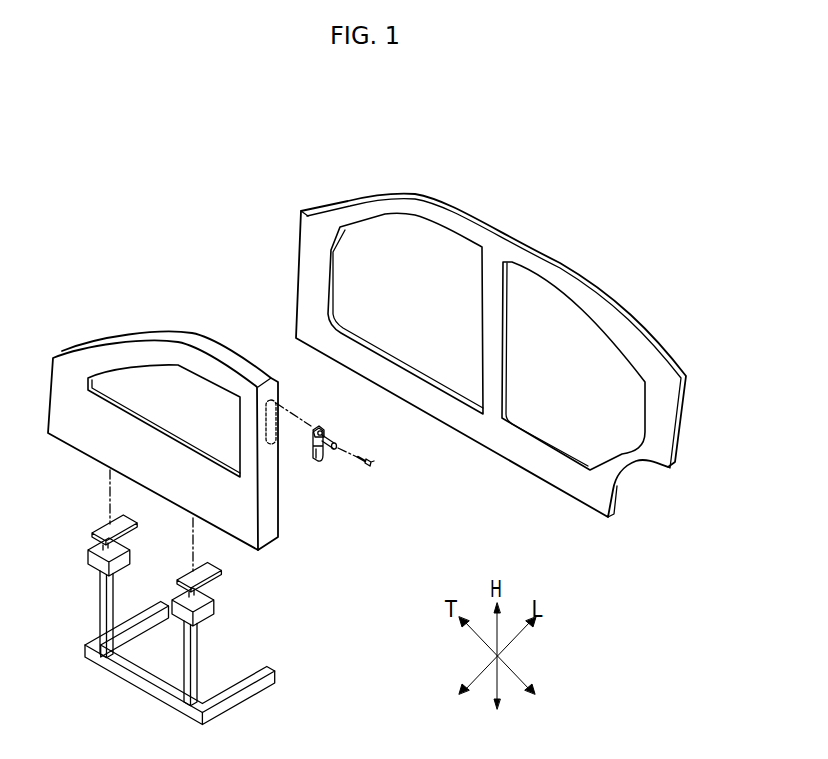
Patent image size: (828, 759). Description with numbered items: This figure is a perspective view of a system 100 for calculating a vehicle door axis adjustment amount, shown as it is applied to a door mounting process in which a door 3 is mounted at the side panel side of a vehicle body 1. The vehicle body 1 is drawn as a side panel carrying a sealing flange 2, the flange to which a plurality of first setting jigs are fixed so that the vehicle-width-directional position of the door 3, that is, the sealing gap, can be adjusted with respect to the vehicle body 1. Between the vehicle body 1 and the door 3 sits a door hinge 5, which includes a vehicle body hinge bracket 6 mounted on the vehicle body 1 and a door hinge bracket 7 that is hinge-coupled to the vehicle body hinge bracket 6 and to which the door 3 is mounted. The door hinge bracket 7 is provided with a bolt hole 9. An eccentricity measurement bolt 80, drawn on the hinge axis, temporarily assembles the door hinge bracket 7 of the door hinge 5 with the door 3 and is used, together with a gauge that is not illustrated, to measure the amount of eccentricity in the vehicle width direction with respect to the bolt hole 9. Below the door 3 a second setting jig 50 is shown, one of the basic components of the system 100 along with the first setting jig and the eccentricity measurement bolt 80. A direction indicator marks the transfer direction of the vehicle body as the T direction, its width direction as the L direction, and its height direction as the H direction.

The system for calculating a vehicle door axis adjustment amount 100 is at (253, 173).
The vehicle body 1 is at (502, 244).
The sealing flange 2 is at (399, 358).
The door 3 is at (110, 352).
The door hinge 5 is at (315, 480).
The vehicle body hinge bracket 6 is at (333, 439).
The door hinge bracket 7 is at (316, 429).
The bolt hole 9 is at (322, 431).
The eccentricity measurement bolt 80 is at (365, 481).
The second setting jig 50 is at (247, 609).